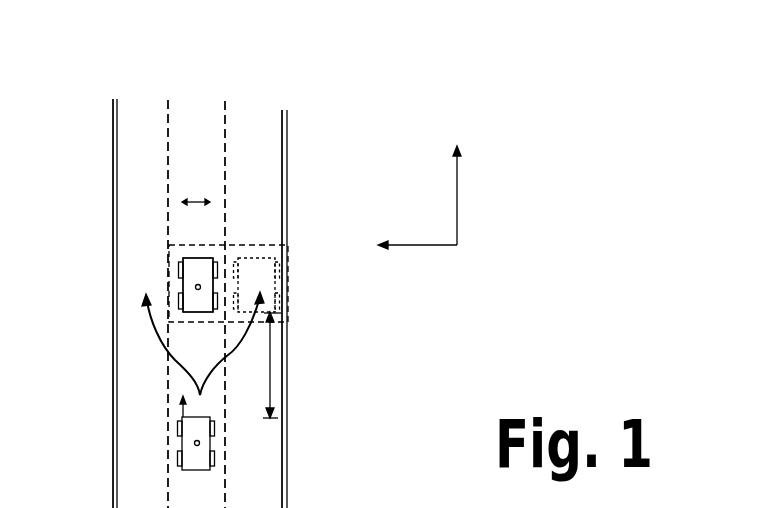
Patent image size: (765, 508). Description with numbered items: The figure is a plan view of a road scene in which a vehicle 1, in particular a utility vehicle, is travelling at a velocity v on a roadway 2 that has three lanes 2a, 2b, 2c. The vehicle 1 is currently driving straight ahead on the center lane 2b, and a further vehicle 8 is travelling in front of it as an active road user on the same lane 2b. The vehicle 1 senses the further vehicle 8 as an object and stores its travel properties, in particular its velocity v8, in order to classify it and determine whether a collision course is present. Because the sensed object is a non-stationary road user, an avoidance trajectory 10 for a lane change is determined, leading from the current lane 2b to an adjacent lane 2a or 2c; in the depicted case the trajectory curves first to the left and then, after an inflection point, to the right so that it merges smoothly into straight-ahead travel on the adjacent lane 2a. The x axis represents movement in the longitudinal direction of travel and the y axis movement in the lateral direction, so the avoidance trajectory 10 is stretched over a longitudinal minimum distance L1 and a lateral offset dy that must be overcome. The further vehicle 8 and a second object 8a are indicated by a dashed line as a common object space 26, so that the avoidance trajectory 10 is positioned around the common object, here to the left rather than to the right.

The vehicle 1 is at (182, 451).
The roadway 2 is at (281, 481).
The lane 2a is at (142, 118).
The lane 2b is at (202, 127).
The lane 2c is at (253, 107).
The further vehicle 8 is at (203, 267).
The object 8a is at (260, 266).
The velocity of the object v8 is at (205, 262).
The avoidance trajectory 10 is at (152, 334).
The common object space 26 is at (266, 247).
The minimum distance L1 is at (271, 357).
The velocity v is at (179, 411).
The lateral offset dy is at (188, 202).
The x axis x is at (444, 191).
The y axis y is at (417, 226).